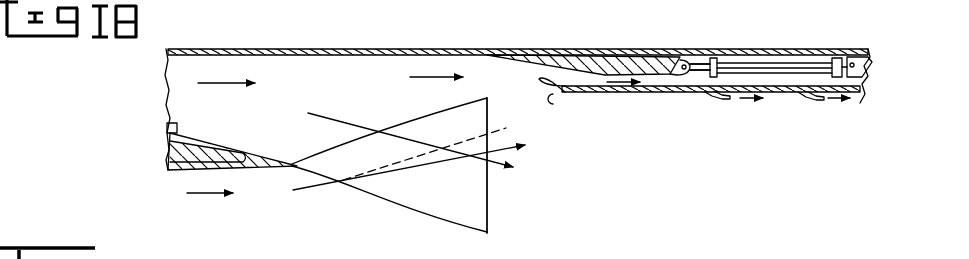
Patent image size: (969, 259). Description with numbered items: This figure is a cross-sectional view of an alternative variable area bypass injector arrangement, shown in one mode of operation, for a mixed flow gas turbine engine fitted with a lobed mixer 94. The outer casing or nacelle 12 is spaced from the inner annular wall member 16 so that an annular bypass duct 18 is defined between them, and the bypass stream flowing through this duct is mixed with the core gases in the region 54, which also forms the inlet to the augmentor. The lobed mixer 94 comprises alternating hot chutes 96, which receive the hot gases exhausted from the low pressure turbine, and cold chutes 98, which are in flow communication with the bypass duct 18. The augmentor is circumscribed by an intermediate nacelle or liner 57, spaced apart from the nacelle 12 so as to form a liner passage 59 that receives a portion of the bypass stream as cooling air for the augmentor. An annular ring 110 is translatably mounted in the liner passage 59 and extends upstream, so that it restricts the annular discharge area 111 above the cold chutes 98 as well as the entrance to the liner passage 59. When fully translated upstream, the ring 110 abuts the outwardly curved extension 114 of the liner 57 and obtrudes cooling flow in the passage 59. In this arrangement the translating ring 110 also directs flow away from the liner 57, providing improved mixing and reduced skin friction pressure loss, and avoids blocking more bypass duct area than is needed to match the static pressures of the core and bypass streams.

The outer casing or nacelle 12 is at (519, 62).
The inner annular wall member 16 is at (172, 125).
The annular bypass duct 18 is at (222, 117).
The mixing region 54 is at (305, 221).
The intermediate nacelle or liner 57 is at (752, 106).
The liner passage 59 is at (693, 78).
The lobed mixer 94 is at (415, 219).
The hot chutes 96 is at (438, 148).
The cold chutes 98 is at (468, 205).
The annular ring 110 is at (602, 64).
The annular discharge area 111 is at (498, 87).
The outwardly curved extension 114 is at (563, 99).